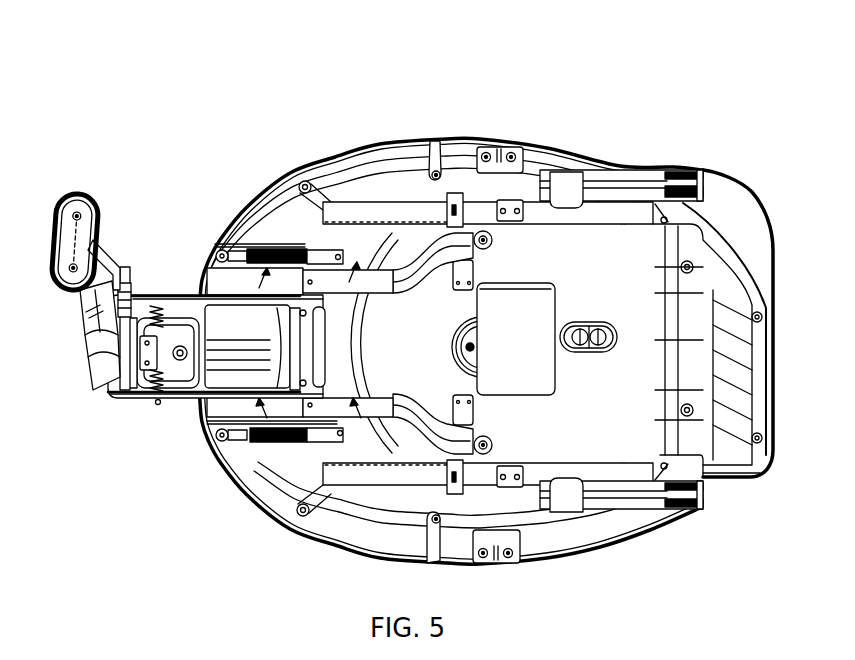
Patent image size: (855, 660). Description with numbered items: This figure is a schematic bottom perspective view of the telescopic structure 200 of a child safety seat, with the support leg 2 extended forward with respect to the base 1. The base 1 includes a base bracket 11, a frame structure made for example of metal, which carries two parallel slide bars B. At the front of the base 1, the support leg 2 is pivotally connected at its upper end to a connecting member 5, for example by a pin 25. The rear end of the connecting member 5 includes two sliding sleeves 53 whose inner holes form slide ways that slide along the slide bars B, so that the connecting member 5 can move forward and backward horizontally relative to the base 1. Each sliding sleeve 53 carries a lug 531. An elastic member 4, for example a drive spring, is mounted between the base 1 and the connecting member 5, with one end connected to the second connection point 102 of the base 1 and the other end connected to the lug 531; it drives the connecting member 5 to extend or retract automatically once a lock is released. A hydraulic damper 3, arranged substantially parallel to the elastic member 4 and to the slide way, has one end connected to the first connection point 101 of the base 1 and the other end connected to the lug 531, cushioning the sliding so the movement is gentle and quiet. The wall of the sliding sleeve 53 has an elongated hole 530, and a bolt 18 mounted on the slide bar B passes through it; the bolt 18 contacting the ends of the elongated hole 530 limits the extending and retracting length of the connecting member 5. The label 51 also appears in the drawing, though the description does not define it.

The telescopic structure 200 is at (483, 56).
The base 1 is at (343, 162).
The base bracket 11 is at (473, 182).
The slide bar B is at (353, 275).
The second connection point 102 is at (210, 268).
The first connection point 101 is at (262, 250).
The elastic member 4 is at (278, 266).
The lug 531 is at (303, 250).
The hydraulic damper 3 is at (318, 245).
The pin 25 is at (150, 312).
The sliding sleeve 53 is at (204, 277).
The upper connecting plate 51 is at (182, 298).
The support leg 2 is at (93, 310).
The connecting member 5 is at (158, 404).
The elongated hole 530 is at (270, 318).
The bolt 18 is at (262, 335).